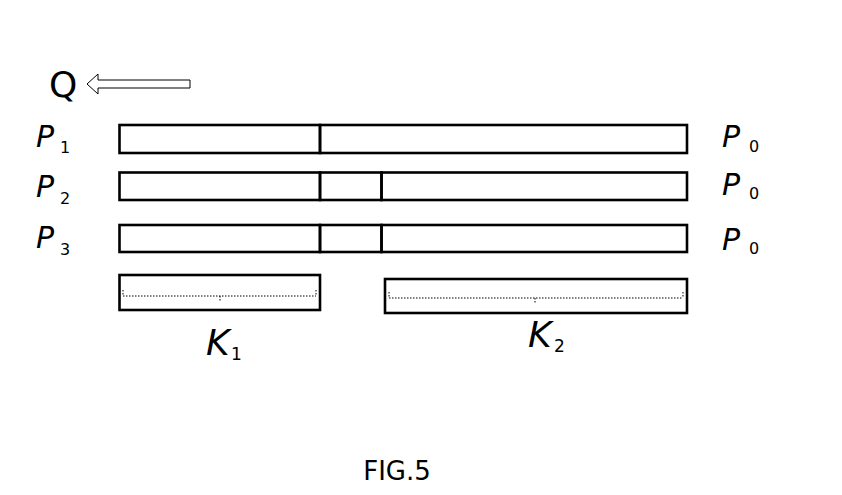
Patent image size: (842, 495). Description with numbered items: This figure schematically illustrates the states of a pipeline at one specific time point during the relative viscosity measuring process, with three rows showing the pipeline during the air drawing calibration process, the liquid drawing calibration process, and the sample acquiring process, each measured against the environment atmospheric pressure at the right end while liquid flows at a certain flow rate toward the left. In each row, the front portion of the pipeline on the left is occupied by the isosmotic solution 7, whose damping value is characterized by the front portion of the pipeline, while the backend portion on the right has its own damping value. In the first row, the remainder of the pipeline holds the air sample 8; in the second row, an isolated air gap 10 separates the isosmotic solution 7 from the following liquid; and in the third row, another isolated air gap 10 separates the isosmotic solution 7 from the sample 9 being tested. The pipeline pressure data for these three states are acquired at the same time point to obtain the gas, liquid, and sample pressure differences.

The isosmotic solution 7 is at (412, 190).
The air sample 8 is at (429, 142).
The sample 9 is at (482, 232).
The isolated air gap 10 is at (365, 240).